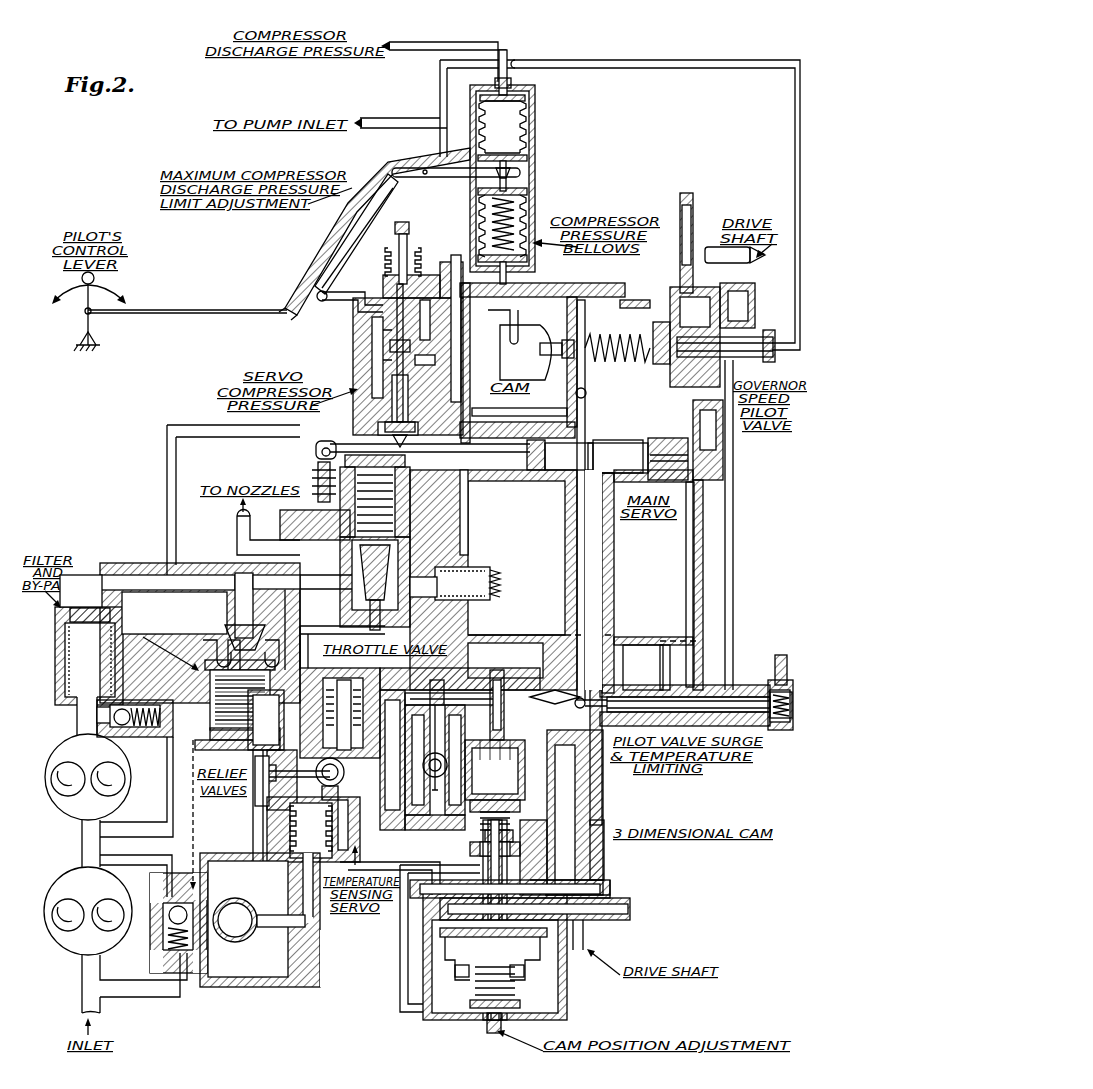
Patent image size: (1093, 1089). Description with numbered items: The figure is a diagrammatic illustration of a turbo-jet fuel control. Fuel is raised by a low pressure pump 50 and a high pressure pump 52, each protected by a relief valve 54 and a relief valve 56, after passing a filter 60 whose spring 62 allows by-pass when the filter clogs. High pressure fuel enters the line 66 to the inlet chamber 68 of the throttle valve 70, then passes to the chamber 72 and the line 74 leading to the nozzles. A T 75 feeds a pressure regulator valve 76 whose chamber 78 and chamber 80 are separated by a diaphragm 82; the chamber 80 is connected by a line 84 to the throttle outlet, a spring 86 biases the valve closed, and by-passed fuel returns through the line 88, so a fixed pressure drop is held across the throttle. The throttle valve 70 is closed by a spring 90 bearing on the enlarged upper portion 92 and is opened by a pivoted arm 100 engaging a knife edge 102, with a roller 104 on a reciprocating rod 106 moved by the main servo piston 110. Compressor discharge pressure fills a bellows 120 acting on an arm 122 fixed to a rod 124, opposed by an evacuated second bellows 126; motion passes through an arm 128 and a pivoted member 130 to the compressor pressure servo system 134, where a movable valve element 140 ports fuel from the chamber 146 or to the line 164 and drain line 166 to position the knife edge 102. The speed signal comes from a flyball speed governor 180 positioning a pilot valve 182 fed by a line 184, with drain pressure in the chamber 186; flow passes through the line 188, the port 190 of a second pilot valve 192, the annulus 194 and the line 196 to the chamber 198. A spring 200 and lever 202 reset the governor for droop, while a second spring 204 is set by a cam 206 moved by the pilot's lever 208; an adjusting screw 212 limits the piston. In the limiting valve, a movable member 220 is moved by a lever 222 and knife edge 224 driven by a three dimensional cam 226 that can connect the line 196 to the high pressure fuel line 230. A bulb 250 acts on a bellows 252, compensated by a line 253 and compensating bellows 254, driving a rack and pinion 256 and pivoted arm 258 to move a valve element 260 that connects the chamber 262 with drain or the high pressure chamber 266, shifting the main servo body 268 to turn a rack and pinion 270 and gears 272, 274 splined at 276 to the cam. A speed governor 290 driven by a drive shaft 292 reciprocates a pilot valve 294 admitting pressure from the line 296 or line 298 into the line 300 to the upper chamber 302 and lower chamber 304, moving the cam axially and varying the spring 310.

The low pressure pump 50 is at (53, 885).
The high pressure pump 52 is at (52, 752).
The relief valve 54 is at (170, 910).
The relief valve 56 is at (128, 734).
The filter 60 is at (64, 650).
The spring 62 is at (86, 625).
The line 66 is at (190, 580).
The inlet chamber 68 is at (300, 583).
The throttle valve 70 is at (415, 527).
The chamber 72 is at (292, 520).
The line 74 is at (235, 520).
The T 75 is at (240, 605).
The pressure regulator valve 76 is at (265, 635).
The chamber 78 is at (272, 665).
The chamber 80 is at (222, 730).
The diaphragm 82 is at (208, 670).
The line 84 is at (245, 745).
The spring 86 is at (220, 707).
The line 88 is at (178, 665).
The spring 90 is at (410, 505).
The enlarged upper portion 92 is at (375, 465).
The pivoted arm 100 is at (362, 395).
The knife edge 102 is at (408, 432).
The roller 104 is at (312, 462).
The reciprocating rod 106 is at (455, 455).
The piston 110 is at (594, 456).
The bellows 120 is at (525, 110).
The arm 122 is at (512, 175).
The rod 124 is at (360, 173).
The second bellows 126 is at (532, 200).
The arm 128 is at (318, 290).
The pivoted member 130 is at (323, 267).
The compressor pressure servo system 134 is at (348, 340).
The movable valve element 140 is at (405, 262).
The chamber 146 is at (490, 437).
The line 164 is at (501, 320).
The drain line 166 is at (368, 118).
The flyball speed governor 180 is at (657, 290).
The pilot valve 182 is at (778, 338).
The line 184 is at (758, 298).
The chamber 186 is at (640, 292).
The line 188 is at (730, 518).
The port 190 is at (735, 672).
The second pilot valve 192 is at (775, 680).
The annulus 194 is at (722, 647).
The line 196 is at (697, 553).
The chamber 198 is at (660, 442).
The spring 200 is at (592, 330).
The lever 202 is at (590, 412).
The second spring 204 is at (618, 300).
The cam 206 is at (510, 340).
The pilot's lever 208 is at (86, 300).
The adjusting screw 212 is at (735, 455).
The movable member 220 is at (620, 690).
The lever 222 is at (585, 618).
The knife edge 224 is at (565, 755).
The three dimensional cam 226 is at (530, 775).
The high pressure fuel line 230 is at (680, 637).
The bulb 250 is at (258, 935).
The bellows 252 is at (292, 820).
The line 253 is at (252, 810).
The compensating bellows 254 is at (365, 690).
The rack and pinion 256 is at (357, 825).
The pivoted arm 258 is at (320, 768).
The valve element 260 is at (338, 785).
The chamber 262 is at (418, 850).
The high pressure chamber 266 is at (460, 749).
The main servo body 268 is at (436, 771).
The rack and pinion 270 is at (493, 766).
The gear 272 is at (440, 706).
The gear 274 is at (510, 690).
The spline 276 is at (495, 770).
The speed governor 290 is at (567, 990).
The drive shaft 292 is at (585, 945).
The pilot valve 294 is at (510, 870).
The line 296 is at (560, 845).
The line 298 is at (593, 877).
The line 300 is at (433, 873).
The upper chamber 302 is at (517, 822).
The lower chamber 304 is at (506, 1000).
The spring 310 is at (540, 805).